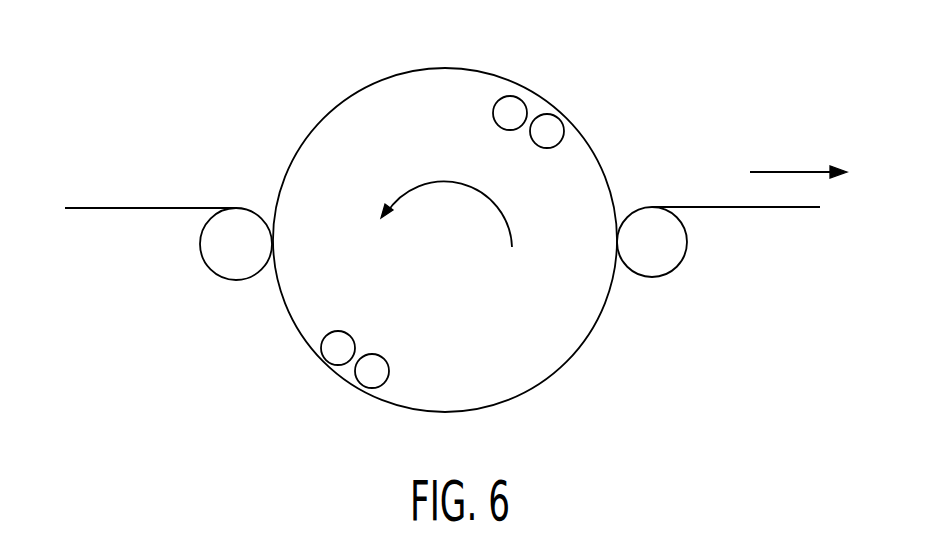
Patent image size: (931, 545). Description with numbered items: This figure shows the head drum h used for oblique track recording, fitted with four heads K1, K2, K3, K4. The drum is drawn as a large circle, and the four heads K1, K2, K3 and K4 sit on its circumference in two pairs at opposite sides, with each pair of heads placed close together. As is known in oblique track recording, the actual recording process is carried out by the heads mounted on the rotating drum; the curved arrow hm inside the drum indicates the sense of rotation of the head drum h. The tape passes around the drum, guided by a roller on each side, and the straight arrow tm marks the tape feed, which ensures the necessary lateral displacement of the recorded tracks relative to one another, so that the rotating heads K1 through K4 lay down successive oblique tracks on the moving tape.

The head drum h is at (445, 240).
The rotation direction of drum hm is at (446, 193).
The tape feed tm is at (798, 155).
The head K1 is at (333, 355).
The head K2 is at (368, 380).
The head K3 is at (555, 128).
The head K4 is at (514, 105).